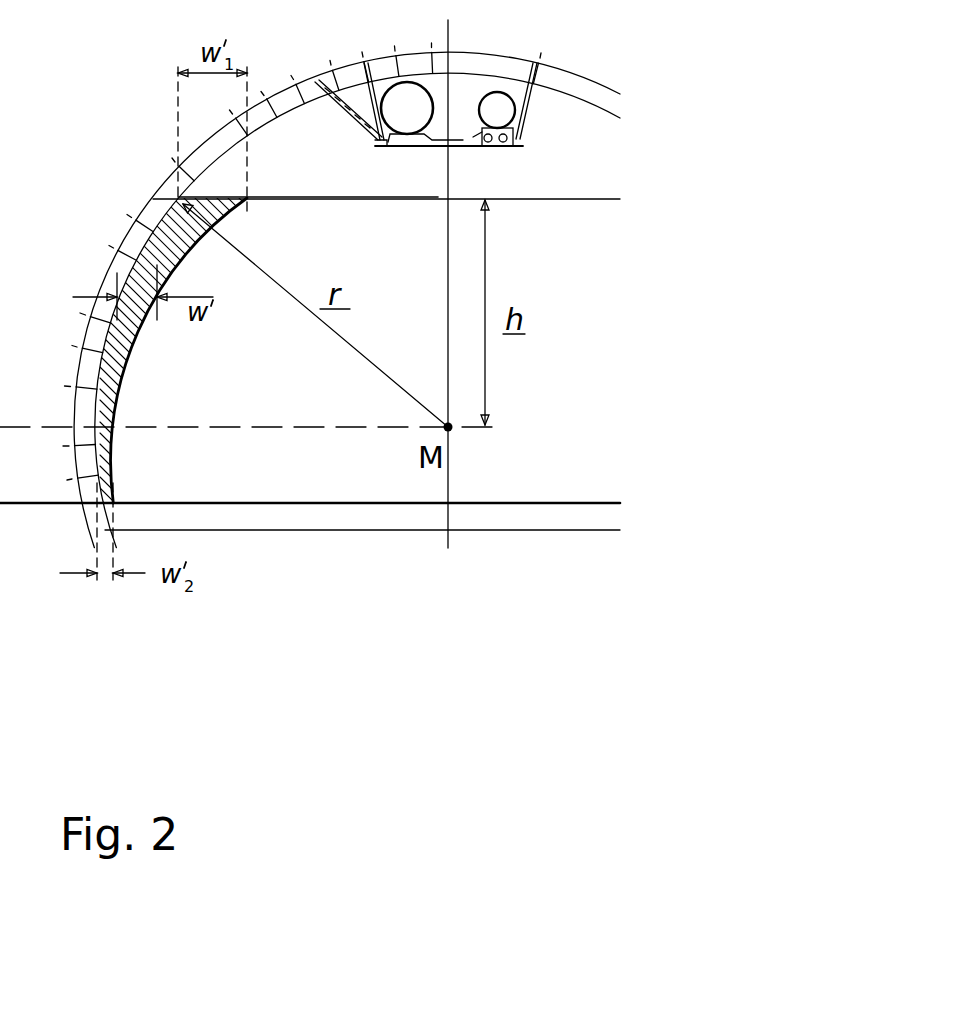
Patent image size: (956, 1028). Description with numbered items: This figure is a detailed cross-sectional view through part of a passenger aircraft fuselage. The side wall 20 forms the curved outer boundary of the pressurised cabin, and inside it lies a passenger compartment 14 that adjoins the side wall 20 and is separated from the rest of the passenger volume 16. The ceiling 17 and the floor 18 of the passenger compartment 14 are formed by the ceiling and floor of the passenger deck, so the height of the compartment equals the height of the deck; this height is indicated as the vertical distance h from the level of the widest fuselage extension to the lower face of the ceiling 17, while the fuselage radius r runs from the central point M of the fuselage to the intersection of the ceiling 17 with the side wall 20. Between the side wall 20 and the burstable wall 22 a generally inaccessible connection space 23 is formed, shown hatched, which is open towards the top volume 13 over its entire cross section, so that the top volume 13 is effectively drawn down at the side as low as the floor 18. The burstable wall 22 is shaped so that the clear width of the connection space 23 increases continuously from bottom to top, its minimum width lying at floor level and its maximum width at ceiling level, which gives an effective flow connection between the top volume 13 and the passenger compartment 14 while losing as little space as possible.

The top volume 13 is at (560, 184).
The passenger compartment 14 is at (315, 392).
The passenger volume 16 is at (588, 405).
The ceiling 17 is at (320, 199).
The floor 18 is at (275, 505).
The side wall 20 is at (133, 244).
The burstable wall 22 is at (135, 350).
The connection space 23 is at (186, 256).